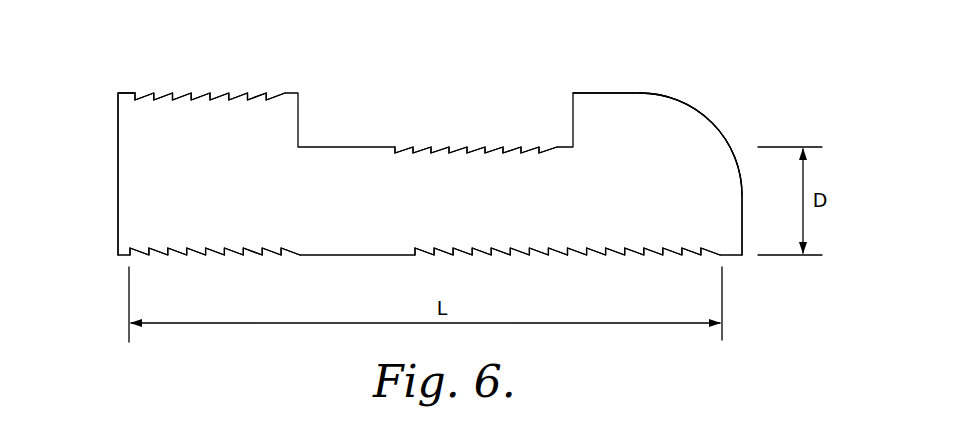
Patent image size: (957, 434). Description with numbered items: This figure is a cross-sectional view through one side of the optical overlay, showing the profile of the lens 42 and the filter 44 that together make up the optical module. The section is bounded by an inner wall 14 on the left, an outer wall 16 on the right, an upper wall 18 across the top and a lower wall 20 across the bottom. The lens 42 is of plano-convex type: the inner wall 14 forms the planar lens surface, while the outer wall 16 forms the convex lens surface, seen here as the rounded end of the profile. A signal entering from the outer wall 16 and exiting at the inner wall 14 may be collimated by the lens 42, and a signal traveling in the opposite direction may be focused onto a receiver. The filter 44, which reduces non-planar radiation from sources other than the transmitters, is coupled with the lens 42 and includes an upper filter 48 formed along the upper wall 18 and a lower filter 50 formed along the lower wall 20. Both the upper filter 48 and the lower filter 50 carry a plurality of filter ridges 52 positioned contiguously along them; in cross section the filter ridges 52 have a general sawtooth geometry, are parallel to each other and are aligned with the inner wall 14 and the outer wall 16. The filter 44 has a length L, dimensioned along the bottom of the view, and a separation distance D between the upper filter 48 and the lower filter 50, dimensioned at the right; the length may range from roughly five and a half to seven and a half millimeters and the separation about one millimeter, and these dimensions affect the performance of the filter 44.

The inner wall 14 is at (118, 163).
The outer wall 16 is at (720, 133).
The upper wall 18 is at (597, 97).
The lower wall 20 is at (562, 253).
The lens 42 is at (130, 72).
The filter 44 is at (712, 72).
The upper filter 48 is at (368, 113).
The lower filter 50 is at (232, 260).
The filter ridges 52 is at (498, 148).